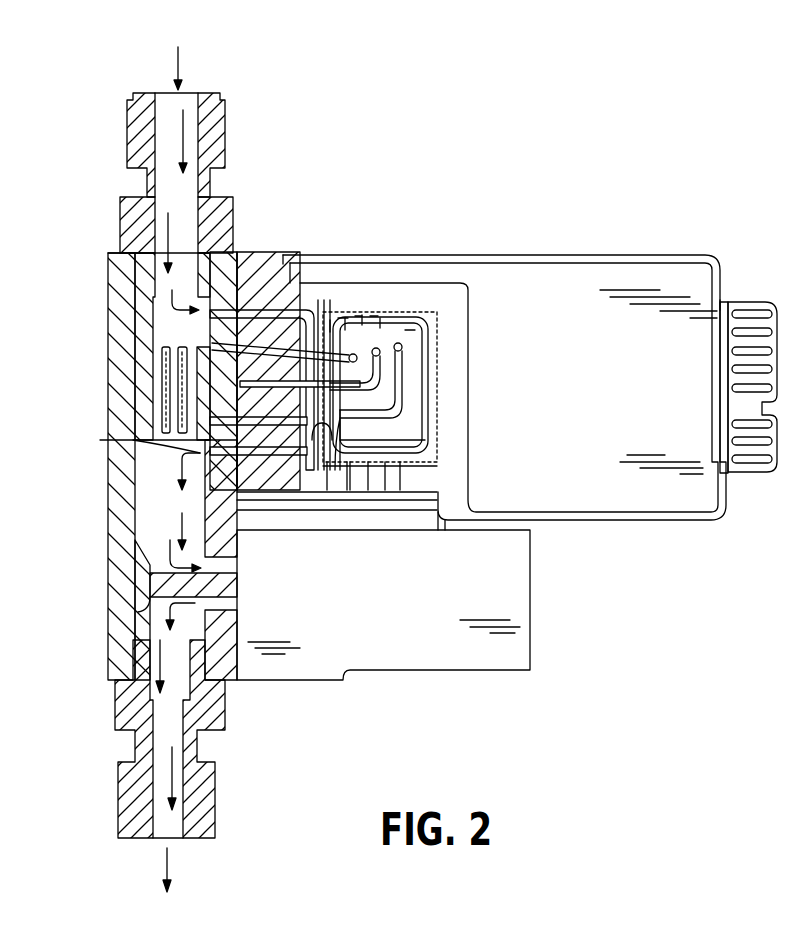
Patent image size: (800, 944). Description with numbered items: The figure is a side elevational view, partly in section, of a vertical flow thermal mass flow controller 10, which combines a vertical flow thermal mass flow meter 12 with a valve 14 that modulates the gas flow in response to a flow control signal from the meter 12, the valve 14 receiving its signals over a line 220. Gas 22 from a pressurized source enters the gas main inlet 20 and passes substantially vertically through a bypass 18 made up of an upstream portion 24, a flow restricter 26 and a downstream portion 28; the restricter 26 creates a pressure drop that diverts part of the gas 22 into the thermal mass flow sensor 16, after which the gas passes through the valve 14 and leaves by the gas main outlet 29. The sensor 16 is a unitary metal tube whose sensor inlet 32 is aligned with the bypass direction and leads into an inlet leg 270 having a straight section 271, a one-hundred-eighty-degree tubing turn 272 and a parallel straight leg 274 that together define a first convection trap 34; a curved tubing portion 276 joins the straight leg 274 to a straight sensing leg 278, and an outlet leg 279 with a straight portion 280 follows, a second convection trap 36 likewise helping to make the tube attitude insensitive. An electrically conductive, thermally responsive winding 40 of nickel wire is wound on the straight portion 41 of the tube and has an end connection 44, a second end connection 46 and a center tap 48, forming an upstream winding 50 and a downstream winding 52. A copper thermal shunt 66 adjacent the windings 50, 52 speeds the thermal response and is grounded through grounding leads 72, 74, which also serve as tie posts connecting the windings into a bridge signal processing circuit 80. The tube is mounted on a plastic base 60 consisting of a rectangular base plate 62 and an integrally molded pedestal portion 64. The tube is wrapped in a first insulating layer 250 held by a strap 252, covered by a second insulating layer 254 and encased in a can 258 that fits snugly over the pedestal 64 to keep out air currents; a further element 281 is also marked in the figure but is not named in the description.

The vertical flow thermal mass flow controller 10 is at (669, 240).
The vertical flow thermal mass flow meter 12 is at (410, 322).
The valve 14 is at (530, 652).
The thermal mass flow sensor 16 is at (503, 256).
The bypass flow path 18 is at (222, 197).
The gas main inlet 20 is at (213, 96).
The flow of gas 22 is at (182, 62).
The upstream portion 24 is at (118, 310).
The flow restricter 26 is at (143, 397).
The downstream portion 28 is at (117, 532).
The gas main outlet 29 is at (213, 817).
The sensor inlet 32 is at (212, 313).
The first convection trap 34 is at (347, 462).
The second convection trap 36 is at (210, 440).
The thermally responsive winding 40 is at (355, 316).
The straight portion 41 is at (370, 316).
The end connection 44 is at (400, 322).
The second end connection 46 is at (440, 337).
The center tap 48 is at (440, 388).
The upstream winding 50 is at (347, 318).
The downstream winding 52 is at (430, 310).
The plastic base 60 is at (278, 253).
The rectangular base plate 62 is at (247, 253).
The pedestal portion 64 is at (312, 520).
The thermal shunt 66 is at (440, 343).
The grounding lead 72 is at (368, 462).
The grounding lead 74 is at (385, 462).
The bridge signal processing circuit 80 is at (753, 300).
The line 220 is at (515, 514).
The first insulating layer 250 is at (340, 320).
The strap 252 is at (420, 318).
The second insulating layer 254 is at (445, 462).
The can 258 is at (440, 443).
The inlet leg 270 is at (268, 253).
The straight section 271 is at (258, 500).
The tubing turn 272 is at (327, 462).
The straight leg 274 is at (350, 462).
The curved tubing portion 276 is at (330, 322).
The straight sensing leg 278 is at (362, 315).
The outlet leg 279 is at (440, 413).
The straight portion 280 is at (440, 367).
The lead 281 is at (400, 462).